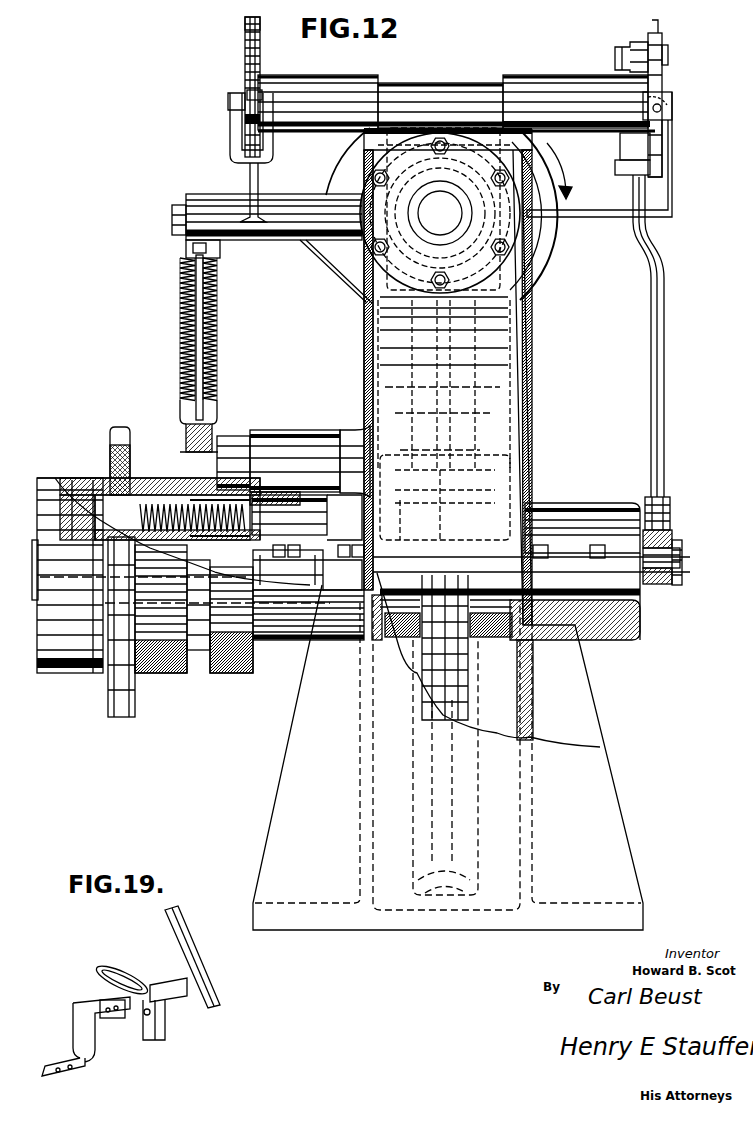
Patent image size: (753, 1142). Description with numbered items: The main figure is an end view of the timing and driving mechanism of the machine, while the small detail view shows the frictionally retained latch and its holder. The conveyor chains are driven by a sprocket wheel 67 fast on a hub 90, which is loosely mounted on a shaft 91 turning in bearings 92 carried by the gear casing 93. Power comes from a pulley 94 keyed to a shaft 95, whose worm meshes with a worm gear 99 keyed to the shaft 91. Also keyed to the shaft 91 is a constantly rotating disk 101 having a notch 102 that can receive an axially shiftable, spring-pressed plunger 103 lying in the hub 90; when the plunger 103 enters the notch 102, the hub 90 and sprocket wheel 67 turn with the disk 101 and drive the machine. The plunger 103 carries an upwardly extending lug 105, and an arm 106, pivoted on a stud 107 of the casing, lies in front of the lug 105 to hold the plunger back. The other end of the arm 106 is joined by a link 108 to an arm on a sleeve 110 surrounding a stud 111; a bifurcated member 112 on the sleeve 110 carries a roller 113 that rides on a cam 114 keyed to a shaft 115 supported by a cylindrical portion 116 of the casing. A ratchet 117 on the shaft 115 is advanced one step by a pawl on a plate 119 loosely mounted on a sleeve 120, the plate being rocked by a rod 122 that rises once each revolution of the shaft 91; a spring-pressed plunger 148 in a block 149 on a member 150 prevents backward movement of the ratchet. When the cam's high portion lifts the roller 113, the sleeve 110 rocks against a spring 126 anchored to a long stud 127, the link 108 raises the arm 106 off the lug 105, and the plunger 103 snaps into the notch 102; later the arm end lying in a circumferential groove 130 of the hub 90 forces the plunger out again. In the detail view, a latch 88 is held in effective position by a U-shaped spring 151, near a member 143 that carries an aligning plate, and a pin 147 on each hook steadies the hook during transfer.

In FIG. 12, the sprocket wheel 67 is at (117, 437).
In FIG. 19, the latch 88 is at (165, 1026).
In FIG. 12, the hub 90 is at (158, 672).
In FIG. 12, the shaft 91 is at (33, 572).
In FIG. 12, the bearings 92 is at (618, 640).
In FIG. 12, the gear casing 93 is at (592, 775).
In FIG. 12, the pulley 94 is at (553, 265).
In FIG. 12, the shaft 95 is at (432, 216).
In FIG. 12, the worm gear 99 is at (464, 670).
In FIG. 12, the disk 101 is at (60, 678).
In FIG. 12, the notch 102 is at (75, 490).
In FIG. 12, the plunger 103 is at (125, 503).
In FIG. 12, the lug 105 is at (218, 495).
In FIG. 12, the arm 106 is at (195, 462).
In FIG. 12, the stud 107 is at (265, 468).
In FIG. 12, the link 108 is at (197, 336).
In FIG. 12, the sleeve 110 is at (237, 240).
In FIG. 12, the stud 111 is at (178, 210).
In FIG. 12, the bifurcated member 112 is at (235, 134).
In FIG. 12, the roller 113 is at (255, 97).
In FIG. 12, the cam 114 is at (245, 25).
In FIG. 12, the shaft 115 is at (447, 84).
In FIG. 12, the cylindrical portion 116 is at (336, 80).
In FIG. 12, the ratchet 117 is at (662, 80).
In FIG. 12, the plate 119 is at (640, 45).
In FIG. 12, the sleeve 120 is at (598, 88).
In FIG. 12, the rod 122 is at (662, 285).
In FIG. 12, the spring 126 is at (215, 302).
In FIG. 12, the long stud 127 is at (313, 438).
In FIG. 12, the groove 130 is at (245, 50).
In FIG. 19, the member 143 is at (87, 1016).
In FIG. 19, the pin 147 is at (188, 949).
In FIG. 12, the spring-pressed plunger 148 is at (668, 100).
In FIG. 12, the block 149 is at (663, 111).
In FIG. 12, the member 150 is at (668, 192).
In FIG. 19, the U-shaped spring 151 is at (97, 985).